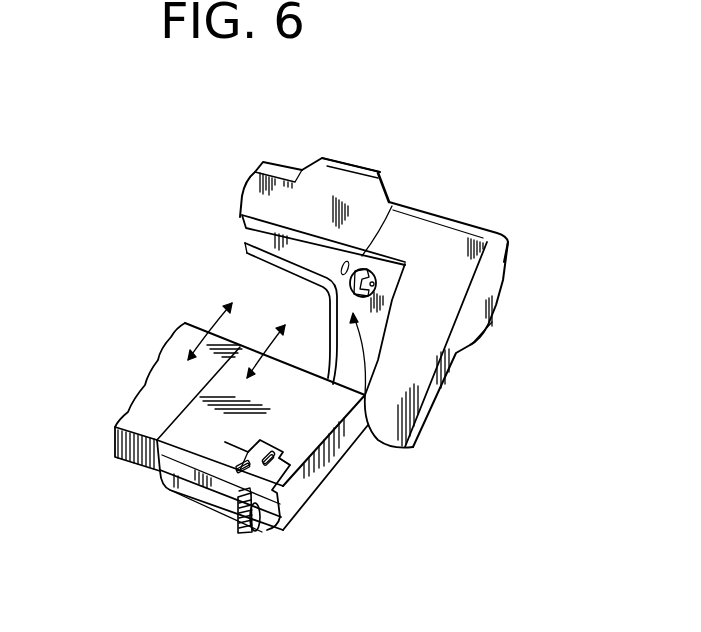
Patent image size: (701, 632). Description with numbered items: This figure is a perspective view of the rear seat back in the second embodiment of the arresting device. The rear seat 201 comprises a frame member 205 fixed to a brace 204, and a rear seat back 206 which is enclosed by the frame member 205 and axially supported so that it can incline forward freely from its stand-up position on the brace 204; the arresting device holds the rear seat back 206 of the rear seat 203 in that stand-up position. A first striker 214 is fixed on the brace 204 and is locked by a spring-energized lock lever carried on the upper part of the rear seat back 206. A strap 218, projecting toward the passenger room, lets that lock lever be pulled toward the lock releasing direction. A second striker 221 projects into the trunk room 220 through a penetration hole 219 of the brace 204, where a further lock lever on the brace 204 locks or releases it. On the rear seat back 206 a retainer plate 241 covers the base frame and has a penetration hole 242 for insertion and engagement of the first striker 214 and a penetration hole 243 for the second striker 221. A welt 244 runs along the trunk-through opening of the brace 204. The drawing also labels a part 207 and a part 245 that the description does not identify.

The rear seat 201 is at (440, 417).
The rear seat 203 is at (493, 310).
The brace 204 is at (307, 243).
The frame member 205 is at (363, 197).
The rear seat back 206 is at (146, 410).
The notch 207 is at (290, 464).
The first striker 214 is at (385, 278).
The strap 218 is at (247, 536).
The penetration hole 219 is at (392, 206).
The trunk room 220 is at (170, 305).
The second striker 221 is at (245, 473).
The retainer plate 241 is at (280, 478).
The penetration hole 242 is at (268, 470).
The penetration hole 243 is at (200, 462).
The welt 244 is at (244, 247).
The groove 245 is at (243, 255).